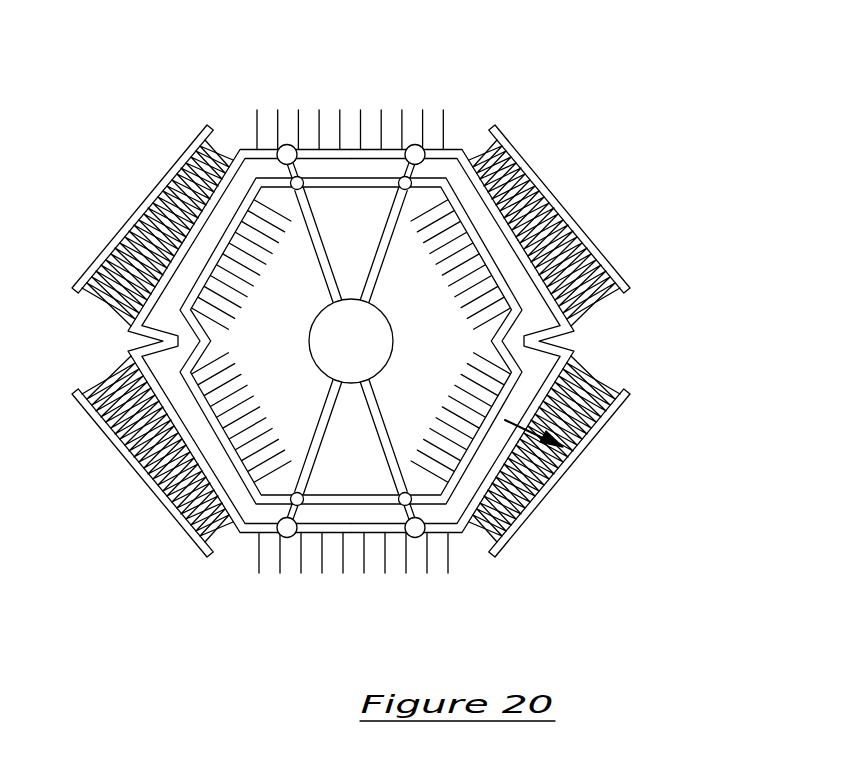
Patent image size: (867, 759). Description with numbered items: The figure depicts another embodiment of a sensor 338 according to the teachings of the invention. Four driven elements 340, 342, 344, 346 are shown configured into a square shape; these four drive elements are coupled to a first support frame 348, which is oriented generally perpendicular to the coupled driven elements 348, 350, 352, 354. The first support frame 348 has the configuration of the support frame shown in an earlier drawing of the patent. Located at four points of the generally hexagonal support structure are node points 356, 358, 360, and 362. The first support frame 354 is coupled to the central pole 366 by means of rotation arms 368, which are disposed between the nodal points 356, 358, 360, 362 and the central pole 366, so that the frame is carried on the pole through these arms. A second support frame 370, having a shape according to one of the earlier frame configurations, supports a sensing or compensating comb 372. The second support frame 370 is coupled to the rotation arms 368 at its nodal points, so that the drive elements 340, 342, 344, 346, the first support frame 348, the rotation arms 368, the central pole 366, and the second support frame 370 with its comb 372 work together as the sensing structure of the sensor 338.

The sensor 338 is at (638, 177).
The driven element 340 is at (118, 231).
The driven element 342 is at (531, 168).
The driven element 344 is at (567, 480).
The driven element 346 is at (143, 483).
The first support frame 348 is at (240, 515).
The coupled driven element 350 is at (238, 152).
The coupled driven element 352 is at (578, 326).
The coupled driven element 354 is at (473, 503).
The node point 356 is at (280, 528).
The node point 358 is at (427, 533).
The node point 360 is at (280, 150).
The node point 362 is at (427, 150).
The central pole 366 is at (394, 341).
The rotation arms 368 is at (385, 225).
The second support frame 370 is at (548, 441).
The sensing or compensating comb 372 is at (340, 110).